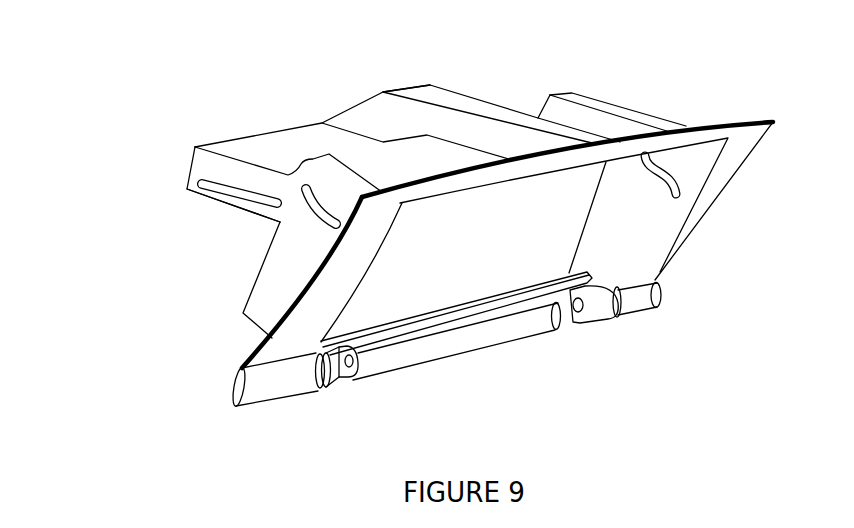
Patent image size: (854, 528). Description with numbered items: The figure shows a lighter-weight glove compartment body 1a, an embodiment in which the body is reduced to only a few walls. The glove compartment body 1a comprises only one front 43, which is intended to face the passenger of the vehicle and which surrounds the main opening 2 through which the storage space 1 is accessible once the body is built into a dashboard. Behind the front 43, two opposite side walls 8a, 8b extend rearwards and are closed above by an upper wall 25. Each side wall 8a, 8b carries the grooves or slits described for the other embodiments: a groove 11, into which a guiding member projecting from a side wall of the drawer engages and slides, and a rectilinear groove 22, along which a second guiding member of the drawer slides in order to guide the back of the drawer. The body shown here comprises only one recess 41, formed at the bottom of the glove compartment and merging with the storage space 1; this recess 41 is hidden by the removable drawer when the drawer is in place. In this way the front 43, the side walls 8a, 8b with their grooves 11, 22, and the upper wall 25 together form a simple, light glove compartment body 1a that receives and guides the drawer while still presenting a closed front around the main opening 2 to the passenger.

The storage space 1 is at (452, 220).
The glove compartment body 1a is at (600, 110).
The main opening 2 is at (460, 269).
The side wall 8a is at (637, 216).
The side wall 8b is at (283, 271).
The groove 11 is at (312, 224).
The rectilinear groove 22 is at (206, 190).
The upper wall 25 is at (470, 102).
The recess 41 is at (434, 185).
The front 43 is at (740, 153).